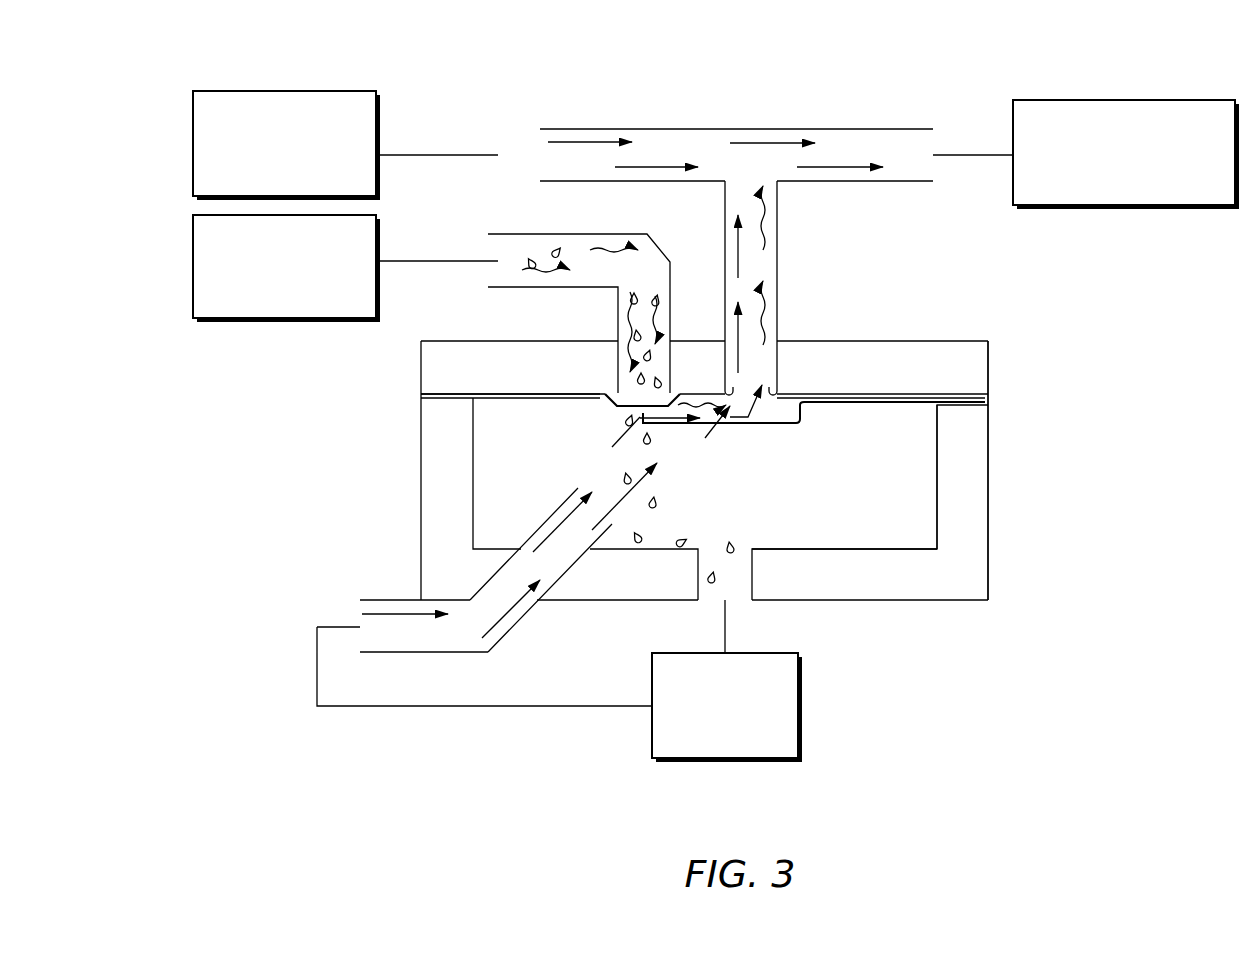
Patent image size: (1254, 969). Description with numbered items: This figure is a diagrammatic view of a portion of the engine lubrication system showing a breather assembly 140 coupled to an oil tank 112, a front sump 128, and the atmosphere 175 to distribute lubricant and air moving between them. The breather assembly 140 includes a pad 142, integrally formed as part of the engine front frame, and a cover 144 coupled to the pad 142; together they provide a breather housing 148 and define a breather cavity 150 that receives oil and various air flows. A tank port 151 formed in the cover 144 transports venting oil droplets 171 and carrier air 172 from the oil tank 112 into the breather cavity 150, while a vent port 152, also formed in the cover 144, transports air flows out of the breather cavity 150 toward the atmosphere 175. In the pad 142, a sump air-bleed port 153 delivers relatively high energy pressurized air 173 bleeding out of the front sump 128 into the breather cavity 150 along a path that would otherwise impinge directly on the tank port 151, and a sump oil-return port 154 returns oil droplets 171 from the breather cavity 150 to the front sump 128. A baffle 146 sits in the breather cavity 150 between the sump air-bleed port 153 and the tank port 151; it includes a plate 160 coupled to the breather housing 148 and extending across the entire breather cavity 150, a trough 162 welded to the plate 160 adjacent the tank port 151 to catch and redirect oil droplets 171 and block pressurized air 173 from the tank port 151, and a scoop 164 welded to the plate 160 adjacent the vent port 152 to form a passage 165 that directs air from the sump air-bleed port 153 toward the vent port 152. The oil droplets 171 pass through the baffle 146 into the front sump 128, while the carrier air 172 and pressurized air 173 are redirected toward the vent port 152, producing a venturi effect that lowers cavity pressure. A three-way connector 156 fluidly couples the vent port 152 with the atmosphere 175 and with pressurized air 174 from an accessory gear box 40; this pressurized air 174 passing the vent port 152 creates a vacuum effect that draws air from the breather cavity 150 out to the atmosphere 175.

The accessory gear box 40 is at (252, 90).
The oil tank 112 is at (203, 216).
The front sump 128 is at (727, 653).
The breather assembly 140 is at (1137, 381).
The pad 142 is at (992, 497).
The cover 144 is at (937, 338).
The baffle 146 is at (488, 404).
The breather housing 148 is at (1020, 450).
The breather cavity 150 is at (908, 523).
The tank port 151 is at (674, 375).
The vent port 152 is at (772, 372).
The sump air-bleed port 153 is at (560, 573).
The sump oil-return port 154 is at (700, 600).
The three-way connector 156 is at (862, 126).
The plate 160 is at (528, 404).
The trough 162 is at (611, 410).
The scoop 164 is at (788, 430).
The passage 165 is at (722, 418).
The oil droplets 171 is at (558, 252).
The carrier air 172 is at (602, 256).
The pressurized air 173 is at (505, 616).
The pressurized air 174 is at (643, 166).
The atmosphere 175 is at (1168, 100).